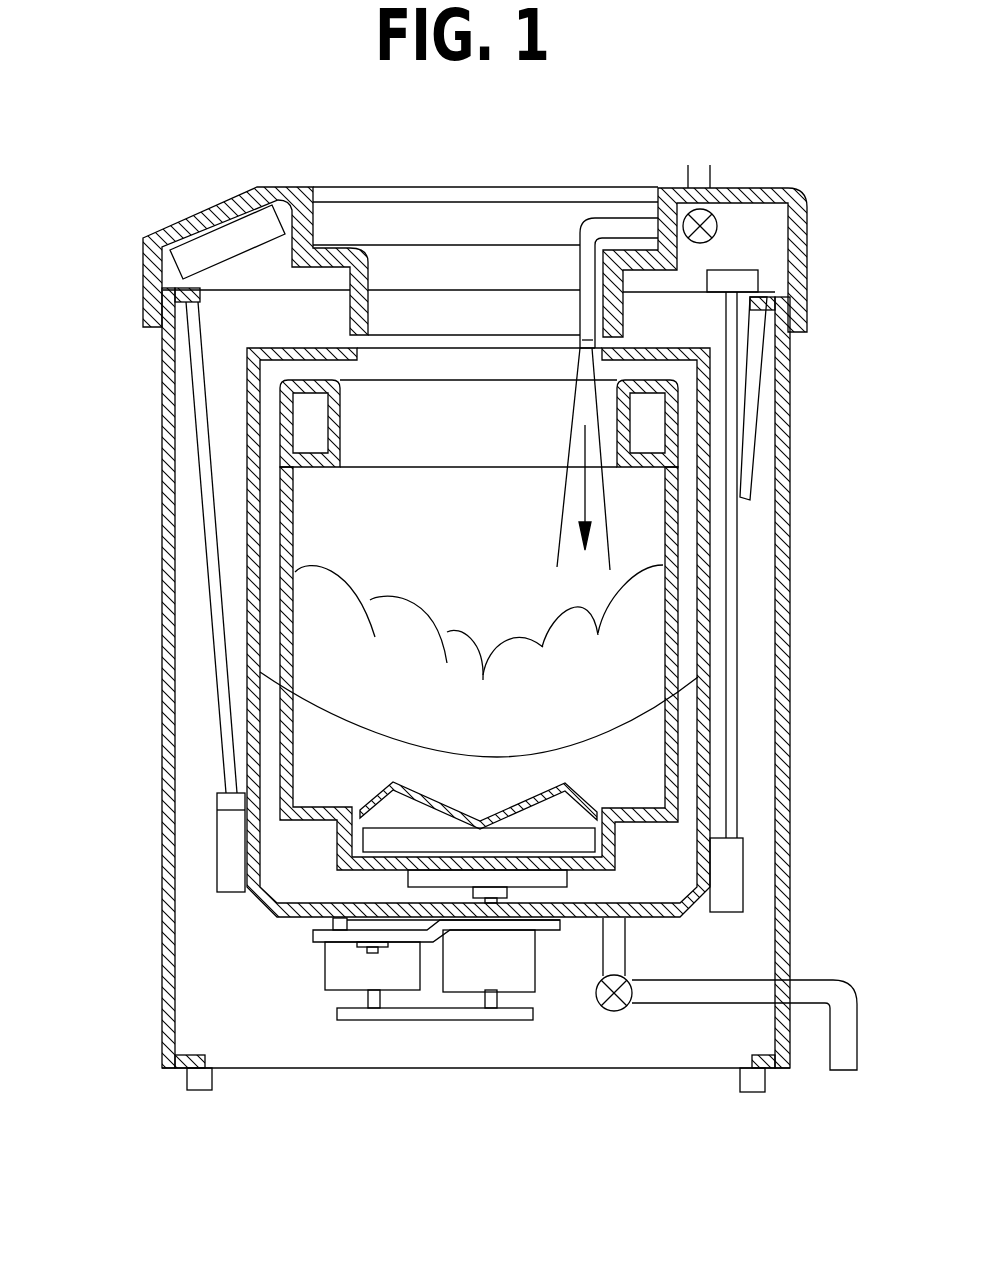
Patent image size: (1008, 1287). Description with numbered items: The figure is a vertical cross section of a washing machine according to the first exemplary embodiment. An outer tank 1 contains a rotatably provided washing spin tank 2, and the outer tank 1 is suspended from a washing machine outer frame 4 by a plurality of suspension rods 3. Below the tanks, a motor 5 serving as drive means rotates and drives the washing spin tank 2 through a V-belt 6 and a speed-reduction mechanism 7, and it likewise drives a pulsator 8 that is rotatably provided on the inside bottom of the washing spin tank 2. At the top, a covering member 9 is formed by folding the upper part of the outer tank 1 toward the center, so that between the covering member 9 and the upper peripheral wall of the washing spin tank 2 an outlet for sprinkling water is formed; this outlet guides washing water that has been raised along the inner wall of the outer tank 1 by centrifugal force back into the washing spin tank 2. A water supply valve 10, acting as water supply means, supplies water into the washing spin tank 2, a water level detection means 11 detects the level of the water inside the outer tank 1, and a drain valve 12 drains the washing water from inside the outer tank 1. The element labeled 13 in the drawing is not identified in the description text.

The outer tank 1 is at (243, 778).
The washing spin tank 2 is at (280, 717).
The suspension rods 3 is at (207, 563).
The washing machine outer frame 4 is at (160, 453).
The motor 5 is at (323, 968).
The V-belt 6 is at (367, 1020).
The speed-reduction mechanism 7 is at (533, 993).
The pulsator 8 is at (588, 800).
The covering member 9 is at (262, 397).
The water supply valve 10 is at (718, 227).
The water level detection means 11 is at (760, 277).
The drain valve 12 is at (620, 1012).
The control panel 13 is at (212, 242).